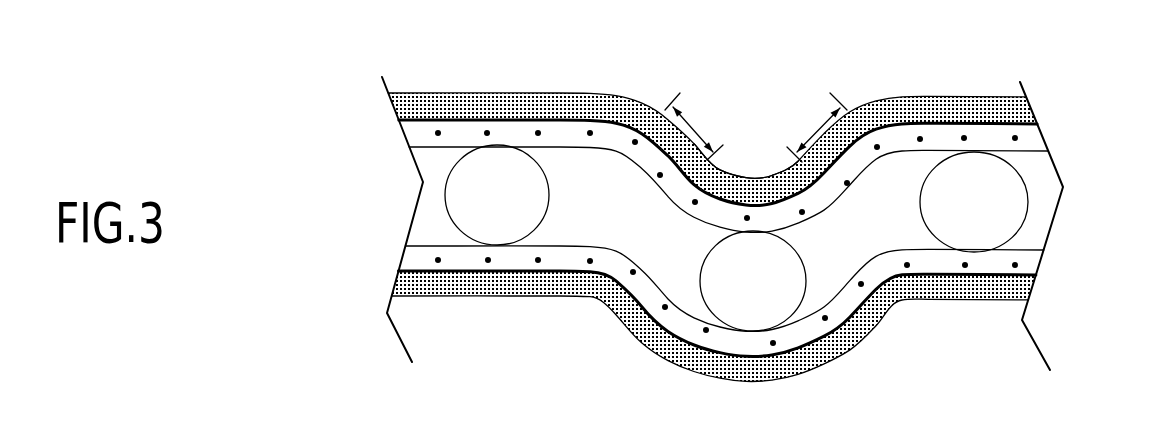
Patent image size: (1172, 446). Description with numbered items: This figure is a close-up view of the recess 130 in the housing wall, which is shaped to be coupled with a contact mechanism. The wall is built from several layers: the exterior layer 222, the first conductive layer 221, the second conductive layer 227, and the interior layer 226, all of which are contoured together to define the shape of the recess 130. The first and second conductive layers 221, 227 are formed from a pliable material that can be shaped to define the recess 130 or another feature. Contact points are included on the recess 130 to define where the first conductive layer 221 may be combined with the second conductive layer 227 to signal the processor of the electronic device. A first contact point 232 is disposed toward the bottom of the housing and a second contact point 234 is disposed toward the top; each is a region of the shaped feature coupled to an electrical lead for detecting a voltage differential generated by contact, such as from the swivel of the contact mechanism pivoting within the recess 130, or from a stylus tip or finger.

The recess 130 is at (753, 160).
The first conductive layer 221 is at (632, 152).
The exterior layer 222 is at (520, 102).
The interior layer 226 is at (520, 298).
The second conductive layer 227 is at (874, 267).
The first contact point 232 is at (688, 118).
The second contact point 234 is at (827, 120).